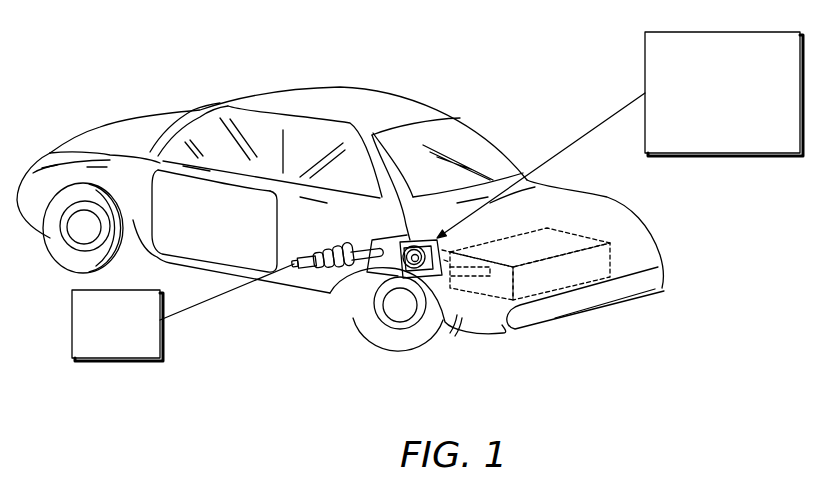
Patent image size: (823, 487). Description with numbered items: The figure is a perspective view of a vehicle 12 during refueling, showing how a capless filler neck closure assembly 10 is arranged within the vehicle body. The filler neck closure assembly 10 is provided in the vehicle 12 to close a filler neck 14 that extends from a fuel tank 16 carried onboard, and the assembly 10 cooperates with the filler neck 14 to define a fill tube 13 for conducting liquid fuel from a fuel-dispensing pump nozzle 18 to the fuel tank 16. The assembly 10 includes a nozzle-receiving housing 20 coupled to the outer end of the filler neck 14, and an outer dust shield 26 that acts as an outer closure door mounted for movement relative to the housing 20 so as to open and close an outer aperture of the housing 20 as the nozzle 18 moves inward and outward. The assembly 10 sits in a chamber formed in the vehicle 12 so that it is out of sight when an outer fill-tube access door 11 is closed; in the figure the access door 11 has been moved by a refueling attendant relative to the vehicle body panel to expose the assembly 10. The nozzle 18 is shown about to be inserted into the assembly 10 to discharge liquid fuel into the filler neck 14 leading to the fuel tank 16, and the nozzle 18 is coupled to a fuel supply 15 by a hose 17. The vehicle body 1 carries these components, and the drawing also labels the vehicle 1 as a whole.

The vehicle body 1 is at (362, 127).
The filler neck closure assembly 10 is at (722, 154).
The outer fill-tube access door 11 is at (334, 293).
The vehicle 12 is at (506, 89).
The fill tube 13 is at (517, 369).
The filler neck 14 is at (462, 290).
The fuel supply 15 is at (118, 359).
The fuel tank 16 is at (554, 244).
The hose 17 is at (208, 301).
The fuel-dispensing pump nozzle 18 is at (312, 230).
The nozzle-receiving housing 20 is at (417, 270).
The outer dust shield 26 is at (400, 270).